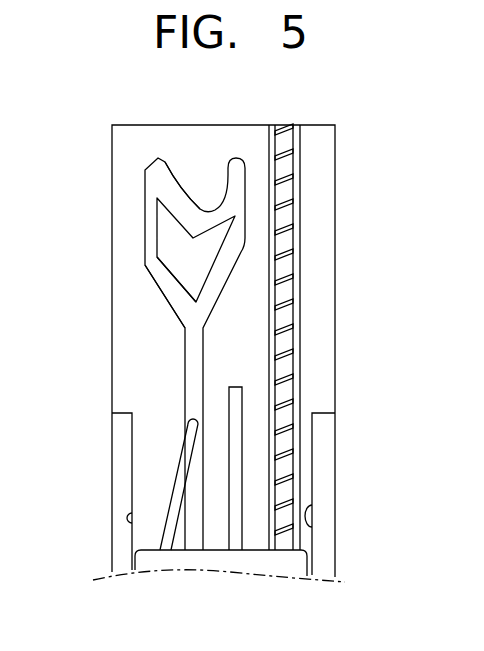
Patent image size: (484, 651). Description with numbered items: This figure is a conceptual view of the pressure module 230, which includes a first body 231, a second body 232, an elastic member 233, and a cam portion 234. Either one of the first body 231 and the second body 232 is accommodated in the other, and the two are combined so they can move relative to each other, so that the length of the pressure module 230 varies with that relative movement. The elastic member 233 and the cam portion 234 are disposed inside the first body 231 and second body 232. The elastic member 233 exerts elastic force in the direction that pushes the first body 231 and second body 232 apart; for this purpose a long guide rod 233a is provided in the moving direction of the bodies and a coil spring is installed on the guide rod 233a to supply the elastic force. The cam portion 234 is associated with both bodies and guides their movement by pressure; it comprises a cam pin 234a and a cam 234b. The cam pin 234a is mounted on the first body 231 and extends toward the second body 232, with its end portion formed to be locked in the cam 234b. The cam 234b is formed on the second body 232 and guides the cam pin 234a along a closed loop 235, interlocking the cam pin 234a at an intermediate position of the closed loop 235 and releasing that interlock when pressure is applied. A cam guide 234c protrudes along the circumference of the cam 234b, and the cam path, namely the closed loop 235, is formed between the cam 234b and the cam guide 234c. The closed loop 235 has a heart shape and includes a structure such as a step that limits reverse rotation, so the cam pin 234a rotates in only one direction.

The pressure module 230 is at (349, 154).
The first body 231 is at (272, 565).
The second body 232 is at (318, 140).
The elastic member 233 is at (346, 337).
The guide rod 233a is at (290, 218).
The cam portion 234 is at (138, 311).
The cam pin 234a is at (185, 447).
The cam 234b is at (165, 220).
The cam guide 234c is at (189, 203).
The closed loop 235 is at (162, 282).